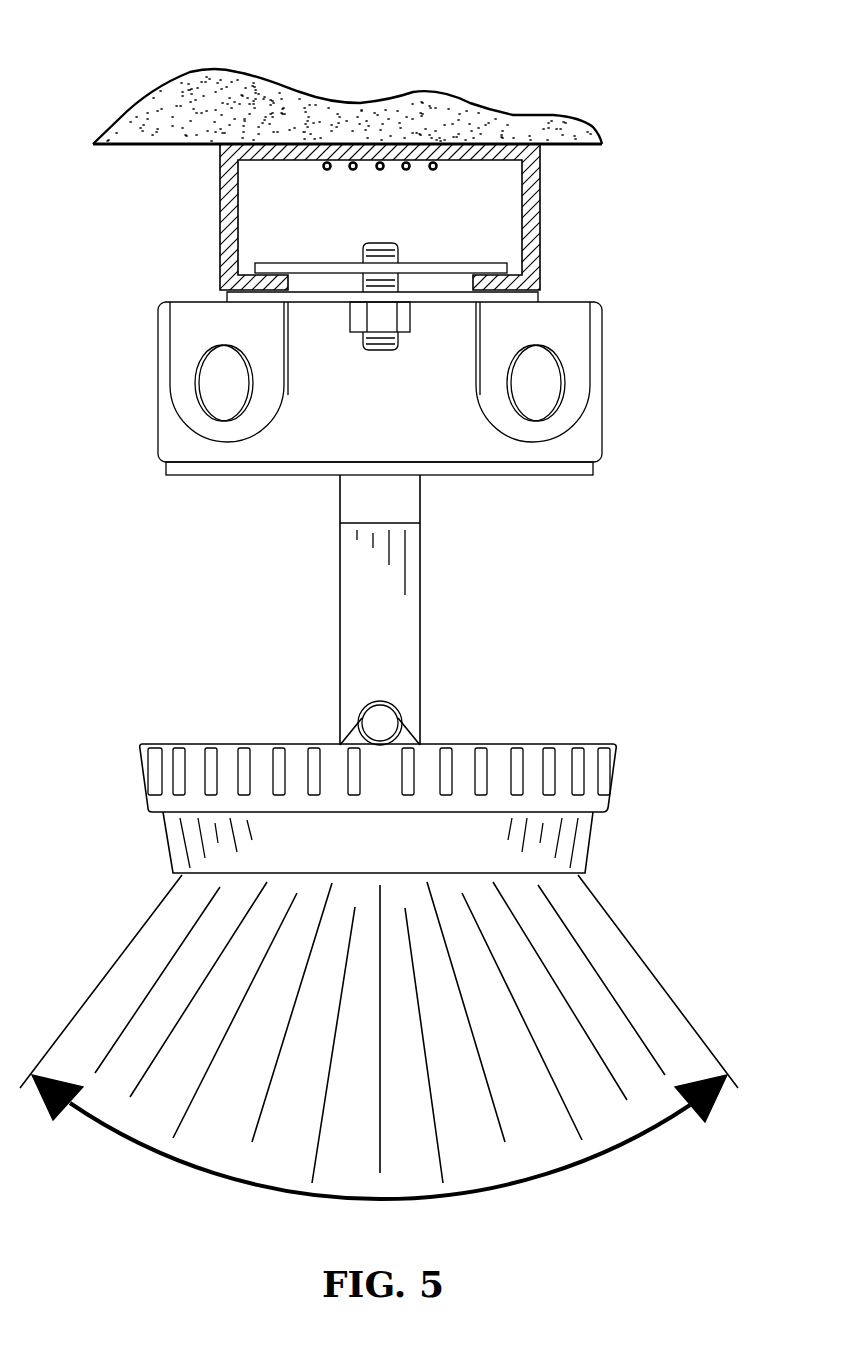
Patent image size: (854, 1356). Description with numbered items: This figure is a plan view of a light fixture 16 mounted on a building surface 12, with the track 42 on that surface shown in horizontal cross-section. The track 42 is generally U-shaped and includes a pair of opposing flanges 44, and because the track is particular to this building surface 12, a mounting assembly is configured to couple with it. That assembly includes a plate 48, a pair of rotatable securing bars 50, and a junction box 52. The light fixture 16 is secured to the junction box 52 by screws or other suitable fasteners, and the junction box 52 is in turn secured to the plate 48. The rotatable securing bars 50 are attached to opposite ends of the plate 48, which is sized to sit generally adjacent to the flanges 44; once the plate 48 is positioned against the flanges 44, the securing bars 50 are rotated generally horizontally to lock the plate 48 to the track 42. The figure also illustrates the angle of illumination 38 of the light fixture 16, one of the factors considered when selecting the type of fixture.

The building surface 12 is at (288, 100).
The track 42 is at (540, 180).
The rotatable securing bar 50 is at (462, 265).
The flange 44 is at (542, 275).
The plate 48 is at (512, 297).
The junction box 52 is at (585, 442).
The light fixture 16 is at (590, 767).
The angle of illumination 38 is at (631, 1139).